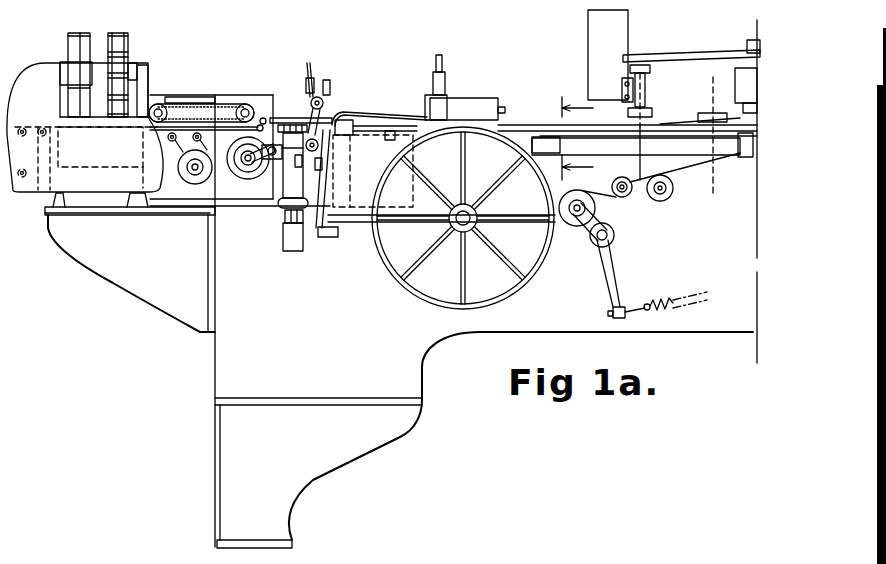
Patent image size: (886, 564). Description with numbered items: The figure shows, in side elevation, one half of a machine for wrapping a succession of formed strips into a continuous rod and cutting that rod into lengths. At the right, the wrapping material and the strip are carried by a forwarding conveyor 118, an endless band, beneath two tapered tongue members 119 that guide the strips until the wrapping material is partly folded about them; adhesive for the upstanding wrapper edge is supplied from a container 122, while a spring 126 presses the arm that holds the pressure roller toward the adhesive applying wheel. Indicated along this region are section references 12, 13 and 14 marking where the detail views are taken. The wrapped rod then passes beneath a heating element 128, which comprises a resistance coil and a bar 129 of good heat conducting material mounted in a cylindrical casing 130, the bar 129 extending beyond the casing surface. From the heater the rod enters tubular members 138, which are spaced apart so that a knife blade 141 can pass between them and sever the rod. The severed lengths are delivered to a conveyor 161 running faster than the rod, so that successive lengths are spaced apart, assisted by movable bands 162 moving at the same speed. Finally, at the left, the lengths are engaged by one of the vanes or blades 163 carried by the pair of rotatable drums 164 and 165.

The line of section / conveyor run 12 is at (713, 90).
The bar / table plate 13 is at (642, 160).
The direction arrows 14 is at (578, 138).
The forwarding conveyor 118 is at (688, 172).
The tongue members 119 is at (740, 113).
The container 122 is at (615, 37).
The spring 126 is at (663, 123).
The heating element 128 is at (414, 102).
The bar 129 is at (505, 118).
The cylindrical casing 130 is at (477, 103).
The tubular members 138 is at (303, 117).
The knife blade 141 is at (310, 68).
The conveyor 161 is at (173, 120).
The movable bands 162 is at (208, 100).
The vanes or blades 163 is at (72, 63).
The rotatable drum 164 is at (130, 47).
The rotatable drum 165 is at (75, 103).